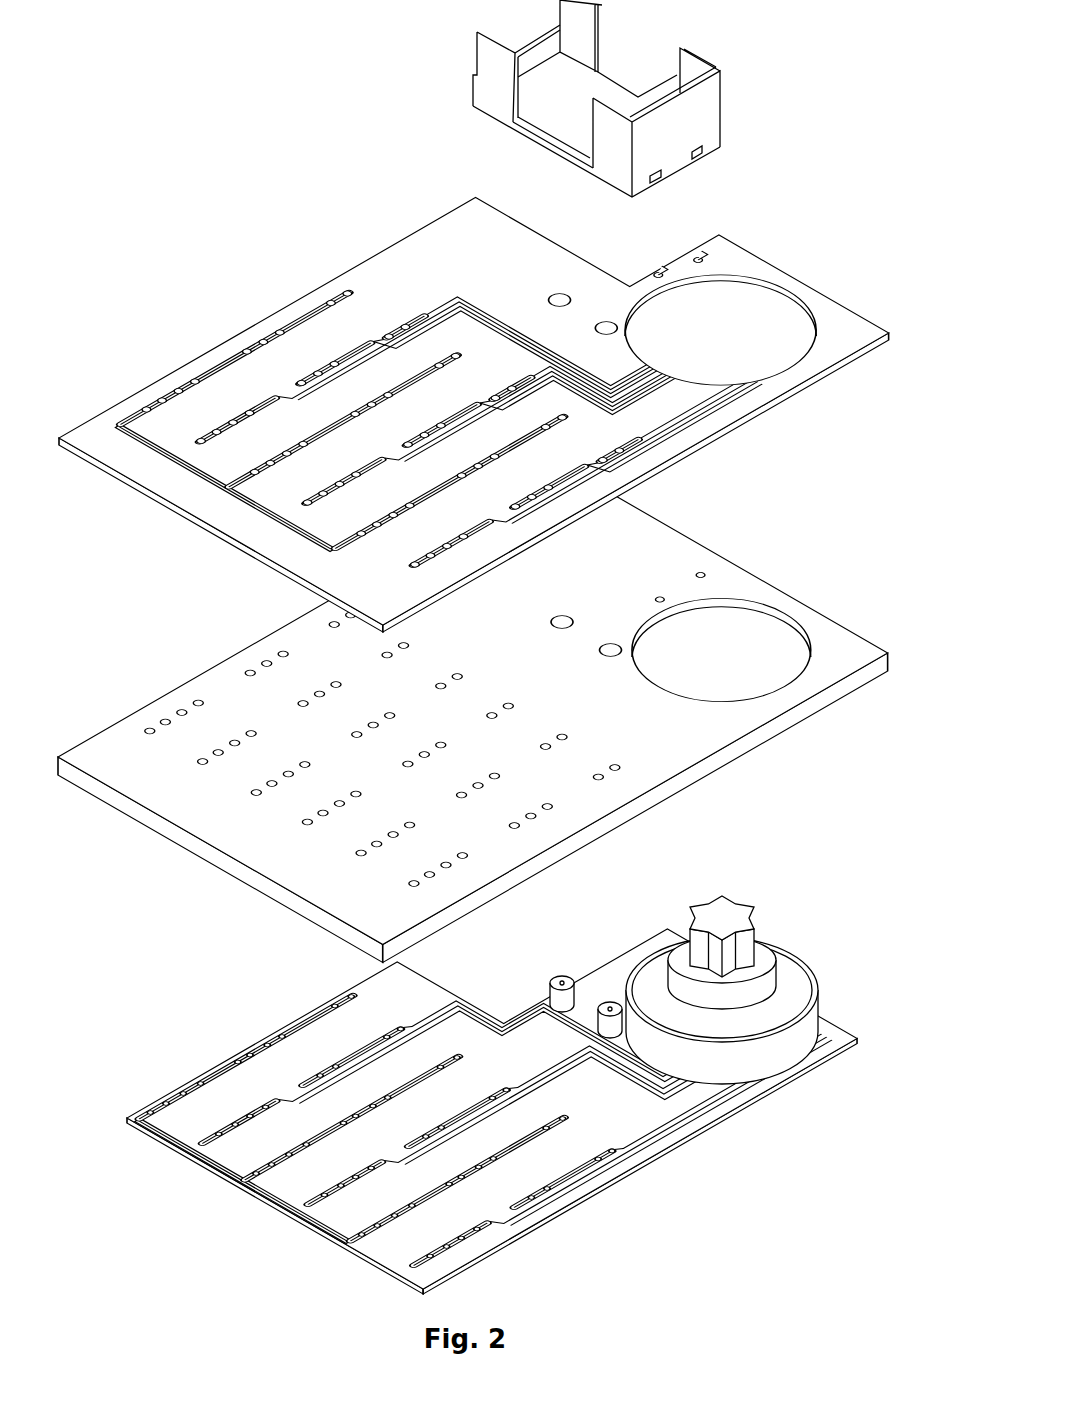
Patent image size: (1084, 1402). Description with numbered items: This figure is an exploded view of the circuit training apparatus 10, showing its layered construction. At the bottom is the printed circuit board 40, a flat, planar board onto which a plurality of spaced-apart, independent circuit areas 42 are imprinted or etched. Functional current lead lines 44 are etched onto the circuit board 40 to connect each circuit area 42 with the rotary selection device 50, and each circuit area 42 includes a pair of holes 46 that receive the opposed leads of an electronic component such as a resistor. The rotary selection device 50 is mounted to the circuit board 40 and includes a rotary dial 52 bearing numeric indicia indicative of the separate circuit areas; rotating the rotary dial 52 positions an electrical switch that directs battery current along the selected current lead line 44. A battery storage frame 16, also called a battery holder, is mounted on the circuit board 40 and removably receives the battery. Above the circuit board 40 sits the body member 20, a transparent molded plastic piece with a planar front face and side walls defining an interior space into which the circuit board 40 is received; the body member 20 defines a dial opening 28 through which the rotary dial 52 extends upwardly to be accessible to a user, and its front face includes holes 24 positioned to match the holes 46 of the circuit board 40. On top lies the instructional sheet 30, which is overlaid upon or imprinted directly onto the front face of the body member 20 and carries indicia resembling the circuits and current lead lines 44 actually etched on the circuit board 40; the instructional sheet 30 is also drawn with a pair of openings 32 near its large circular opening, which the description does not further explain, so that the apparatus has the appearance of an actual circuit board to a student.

The circuit training apparatus 10 is at (176, 100).
The battery storage frame 16 is at (700, 118).
The body member 20 is at (472, 714).
The holes 24 is at (610, 645).
The dial opening 28 is at (768, 630).
The instructional sheet 30 is at (474, 389).
The holes 32 is at (610, 325).
The circuit board 40 is at (536, 1070).
The circuit areas 42 is at (362, 1024).
The current lead lines 44 is at (600, 1110).
The holes 46 is at (253, 1117).
The rotary selection device 50 is at (787, 965).
The rotary dial 52 is at (717, 913).